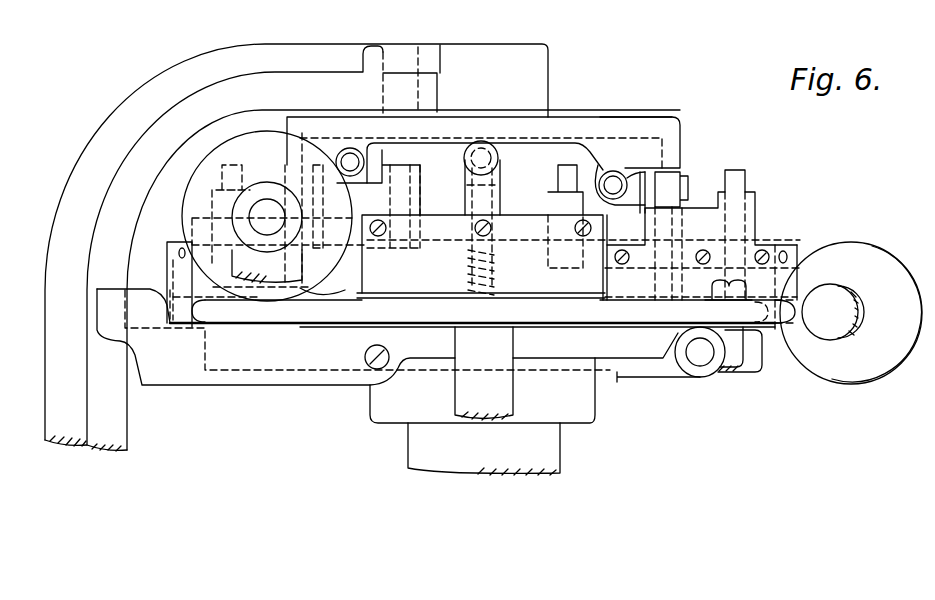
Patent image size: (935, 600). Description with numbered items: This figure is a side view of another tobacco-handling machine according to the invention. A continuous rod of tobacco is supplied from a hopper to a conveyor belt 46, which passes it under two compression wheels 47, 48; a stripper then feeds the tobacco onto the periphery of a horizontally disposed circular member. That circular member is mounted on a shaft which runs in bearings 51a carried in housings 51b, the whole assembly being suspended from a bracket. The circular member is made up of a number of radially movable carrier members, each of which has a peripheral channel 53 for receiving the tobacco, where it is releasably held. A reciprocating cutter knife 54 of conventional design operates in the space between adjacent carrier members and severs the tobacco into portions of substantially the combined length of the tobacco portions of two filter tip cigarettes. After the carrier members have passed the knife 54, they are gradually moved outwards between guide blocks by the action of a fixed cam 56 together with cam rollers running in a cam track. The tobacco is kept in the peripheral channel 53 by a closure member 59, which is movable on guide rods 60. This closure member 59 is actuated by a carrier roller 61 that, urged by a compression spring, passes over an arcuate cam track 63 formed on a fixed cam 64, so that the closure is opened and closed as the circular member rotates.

The conveyor belt 46 is at (248, 327).
The compression wheel 47 is at (196, 189).
The compression wheel 48 is at (448, 313).
The bearing 51a is at (110, 415).
The housing 51b is at (432, 453).
The peripheral channel 53 is at (822, 287).
The reciprocating cutter knife 54 is at (764, 334).
The fixed cam 56 is at (582, 360).
The closure member 59 is at (165, 256).
The guide rod 60 is at (736, 184).
The carrier roller 61 is at (496, 148).
The arcuate cam track 63 is at (597, 162).
The fixed cam 64 is at (672, 120).